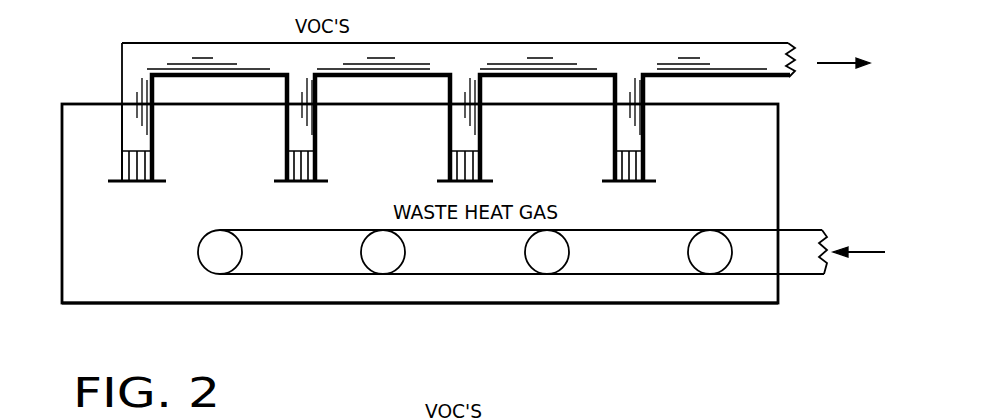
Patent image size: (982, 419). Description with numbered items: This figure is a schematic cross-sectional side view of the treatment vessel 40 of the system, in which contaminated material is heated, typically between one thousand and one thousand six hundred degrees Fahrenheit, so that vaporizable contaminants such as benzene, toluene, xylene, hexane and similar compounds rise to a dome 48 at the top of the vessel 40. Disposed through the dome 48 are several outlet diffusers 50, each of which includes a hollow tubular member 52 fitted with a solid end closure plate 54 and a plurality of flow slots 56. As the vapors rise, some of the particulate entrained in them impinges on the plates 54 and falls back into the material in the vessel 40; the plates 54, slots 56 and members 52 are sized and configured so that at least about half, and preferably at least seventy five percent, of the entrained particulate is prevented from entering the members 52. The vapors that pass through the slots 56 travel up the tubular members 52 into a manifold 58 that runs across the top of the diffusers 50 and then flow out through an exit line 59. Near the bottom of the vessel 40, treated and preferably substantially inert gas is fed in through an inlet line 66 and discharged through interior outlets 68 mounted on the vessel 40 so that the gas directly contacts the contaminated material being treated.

The treatment vessel 40 is at (638, 305).
The dome 48 is at (778, 133).
The outlet diffusers 50 is at (123, 133).
The hollow tubular member 52 is at (128, 115).
The solid end closure plates 54 is at (108, 181).
The flow slots 56 is at (136, 181).
The manifold 58 is at (580, 58).
The exit line 59 is at (783, 44).
The inlet line 66 is at (793, 278).
The interior outlets 68 is at (220, 262).